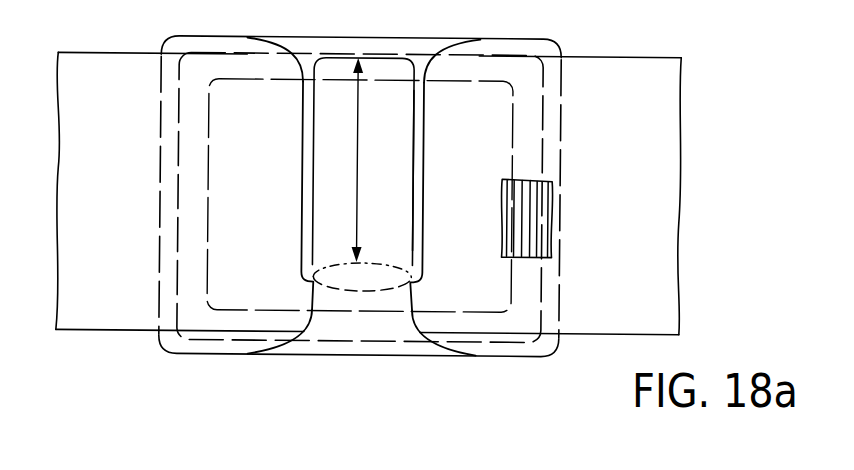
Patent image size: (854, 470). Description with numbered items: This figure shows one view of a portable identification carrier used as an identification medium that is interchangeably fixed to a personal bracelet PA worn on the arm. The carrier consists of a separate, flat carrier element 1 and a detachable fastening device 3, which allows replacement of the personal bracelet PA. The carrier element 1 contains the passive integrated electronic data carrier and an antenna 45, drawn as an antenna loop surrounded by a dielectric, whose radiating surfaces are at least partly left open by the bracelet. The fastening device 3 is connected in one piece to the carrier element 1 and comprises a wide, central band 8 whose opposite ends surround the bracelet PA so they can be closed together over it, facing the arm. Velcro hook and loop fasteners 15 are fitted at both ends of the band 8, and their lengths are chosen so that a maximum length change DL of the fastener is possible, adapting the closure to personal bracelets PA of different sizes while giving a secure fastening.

The carrier element 1 is at (551, 122).
The fastening device 3 is at (439, 265).
The band 8 is at (289, 124).
The hook and loop fastener 15 is at (414, 203).
The antenna 45 is at (553, 210).
The maximum length change DL is at (378, 160).
The personal bracelet PA is at (663, 122).